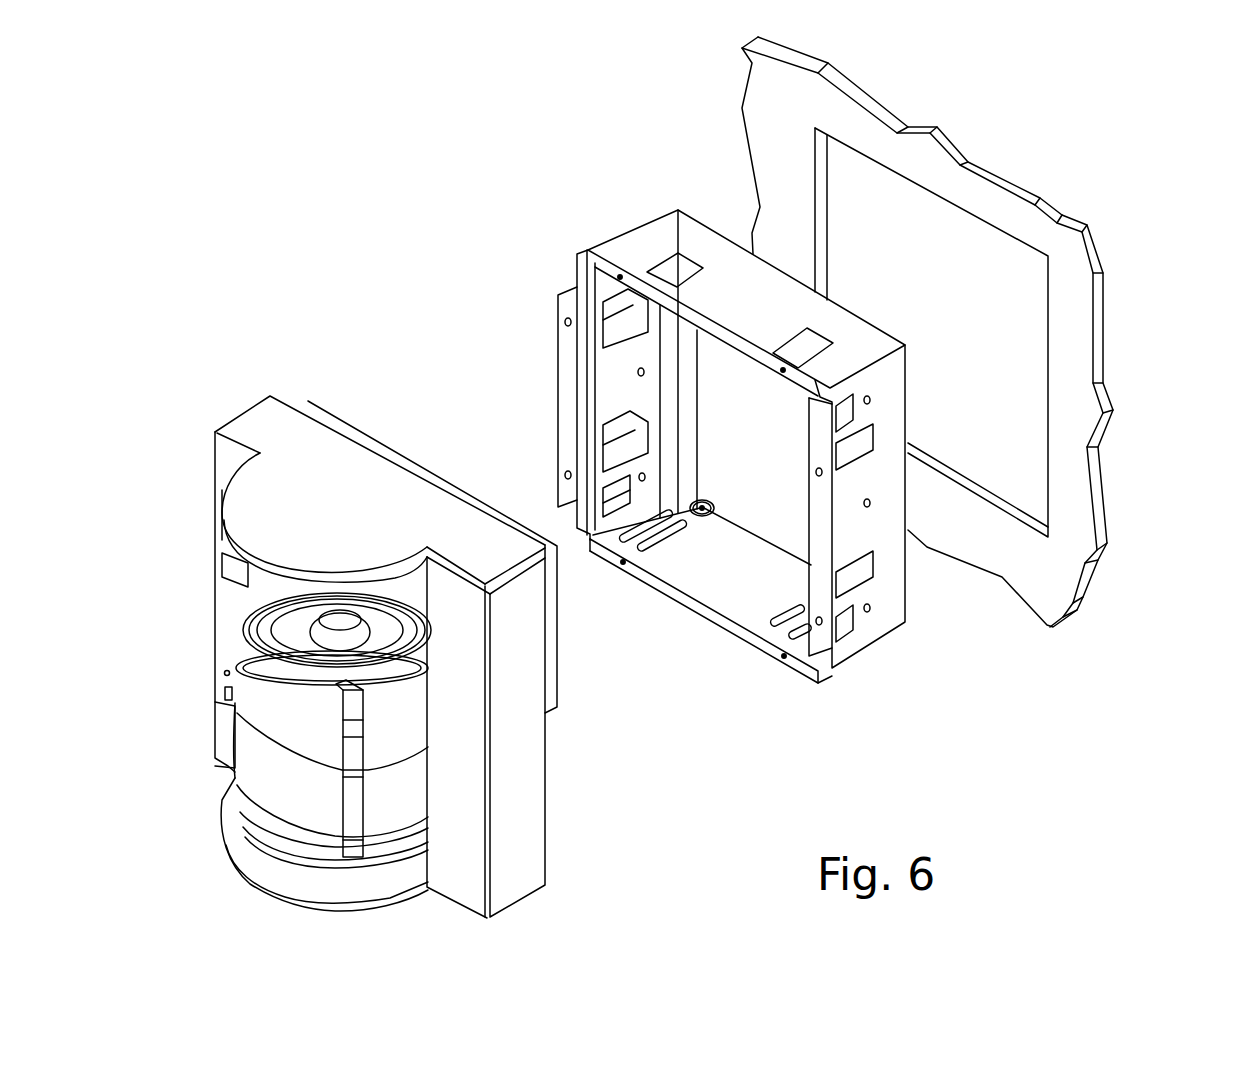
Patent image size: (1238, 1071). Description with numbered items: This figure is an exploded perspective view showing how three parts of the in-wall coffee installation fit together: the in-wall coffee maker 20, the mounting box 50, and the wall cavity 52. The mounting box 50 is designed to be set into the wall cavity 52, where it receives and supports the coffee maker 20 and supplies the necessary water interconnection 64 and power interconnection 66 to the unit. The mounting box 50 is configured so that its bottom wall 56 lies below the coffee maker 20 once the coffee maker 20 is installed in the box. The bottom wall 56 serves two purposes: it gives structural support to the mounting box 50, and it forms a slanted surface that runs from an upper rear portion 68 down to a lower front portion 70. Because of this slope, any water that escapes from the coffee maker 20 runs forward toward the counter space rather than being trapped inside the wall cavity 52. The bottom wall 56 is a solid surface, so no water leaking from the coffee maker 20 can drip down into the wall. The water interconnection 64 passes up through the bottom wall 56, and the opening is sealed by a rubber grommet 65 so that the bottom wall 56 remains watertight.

The in-wall coffee maker 20 is at (253, 402).
The mounting box 50 is at (653, 221).
The wall cavity 52 is at (1007, 303).
The bottom wall 56 is at (765, 609).
The water interconnection 64 is at (702, 515).
The rubber grommet 65 is at (700, 512).
The power interconnection 66 is at (670, 422).
The upper rear portion 68 is at (767, 570).
The lower front portion 70 is at (732, 617).